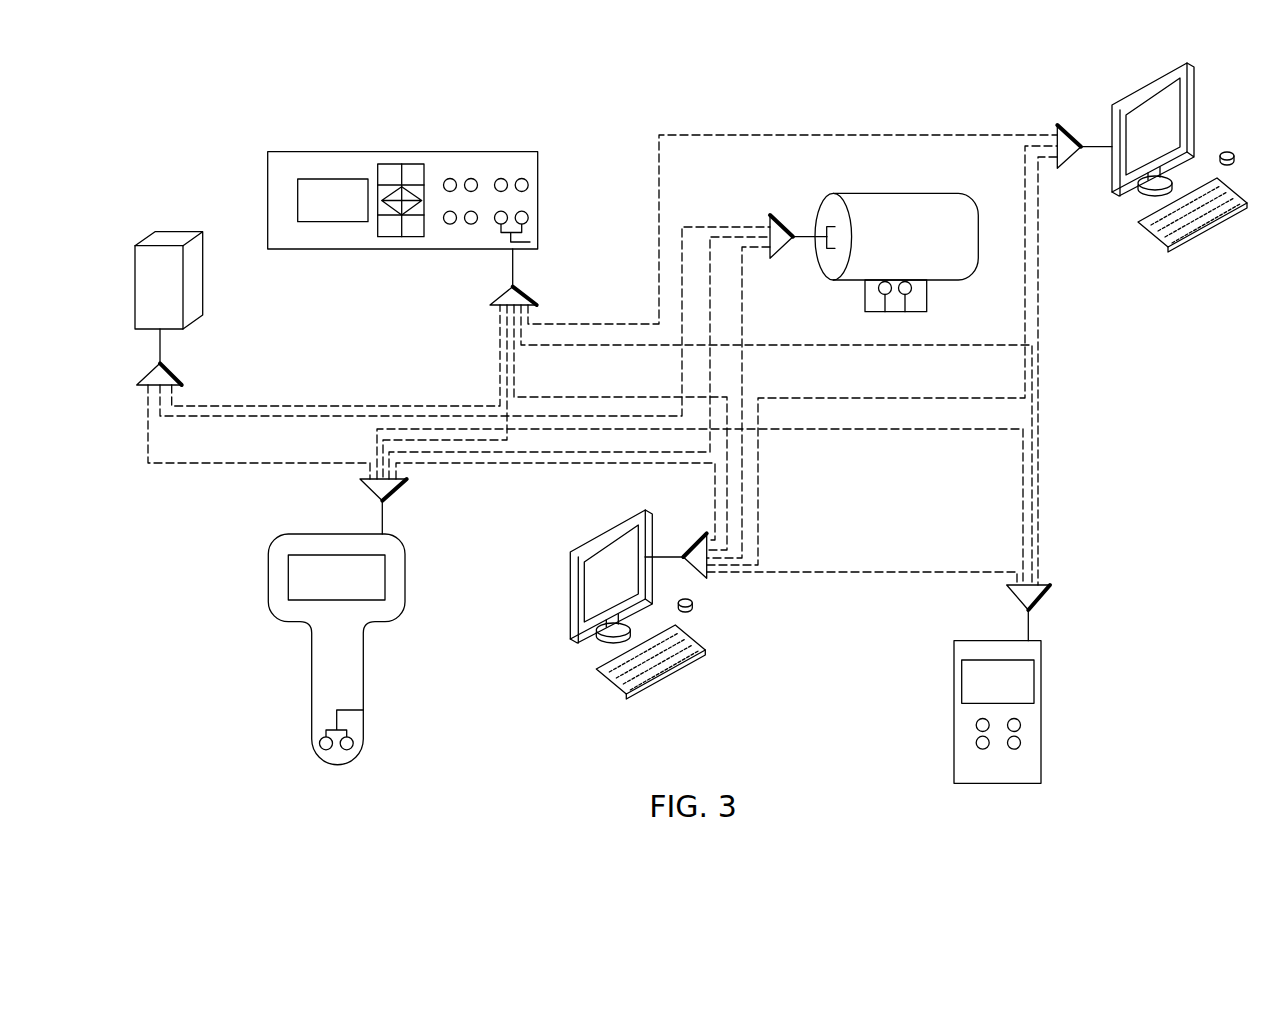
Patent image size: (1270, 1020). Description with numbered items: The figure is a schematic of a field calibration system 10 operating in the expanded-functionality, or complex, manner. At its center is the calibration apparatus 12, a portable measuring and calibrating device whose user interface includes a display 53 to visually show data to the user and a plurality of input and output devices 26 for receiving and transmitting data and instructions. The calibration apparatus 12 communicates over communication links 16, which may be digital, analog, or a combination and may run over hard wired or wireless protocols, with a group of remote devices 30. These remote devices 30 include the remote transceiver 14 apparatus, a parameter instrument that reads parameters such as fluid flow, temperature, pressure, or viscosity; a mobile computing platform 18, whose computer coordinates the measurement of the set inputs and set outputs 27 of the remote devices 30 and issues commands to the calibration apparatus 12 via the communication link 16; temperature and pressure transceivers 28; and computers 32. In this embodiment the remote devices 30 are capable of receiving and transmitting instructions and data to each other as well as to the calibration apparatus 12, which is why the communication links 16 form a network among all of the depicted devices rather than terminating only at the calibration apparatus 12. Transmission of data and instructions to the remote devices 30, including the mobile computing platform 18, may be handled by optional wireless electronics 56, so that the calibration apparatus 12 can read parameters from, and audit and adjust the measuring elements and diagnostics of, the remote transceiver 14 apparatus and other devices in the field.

The field calibration system 10 is at (1056, 86).
The calibration apparatus 12 is at (403, 183).
The remote transceiver apparatus 14 is at (1043, 707).
The communication link 16 is at (333, 405).
The mobile computing platform 18 is at (357, 730).
The input and output devices 26 is at (532, 211).
The set inputs and set outputs 27 is at (158, 352).
The temperature and/or pressure transceivers 28 is at (897, 193).
The remote devices 30 is at (180, 231).
The computer 32 is at (1213, 222).
The display 53 is at (333, 178).
The wireless electronics 56 is at (1070, 172).